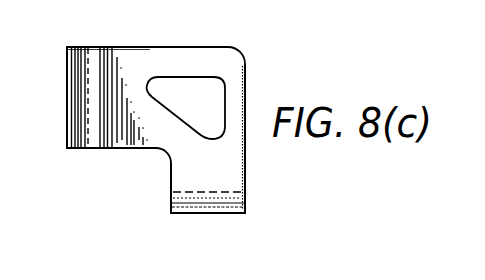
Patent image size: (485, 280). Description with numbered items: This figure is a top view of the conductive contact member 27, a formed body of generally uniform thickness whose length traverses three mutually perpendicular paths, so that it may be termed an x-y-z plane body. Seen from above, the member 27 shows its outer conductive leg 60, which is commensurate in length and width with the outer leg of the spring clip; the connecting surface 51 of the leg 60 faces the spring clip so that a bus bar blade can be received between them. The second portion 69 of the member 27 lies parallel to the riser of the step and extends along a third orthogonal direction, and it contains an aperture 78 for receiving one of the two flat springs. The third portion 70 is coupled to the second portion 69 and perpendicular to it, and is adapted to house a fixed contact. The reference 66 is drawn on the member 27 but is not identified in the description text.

The conductive contact member 27 is at (118, 204).
The connecting surface 51 is at (217, 213).
The outer conductive leg 60 is at (170, 206).
The side coating layer 66 is at (251, 182).
The second portion 69 is at (96, 47).
The third portion 70 is at (67, 132).
The aperture 78 is at (213, 98).